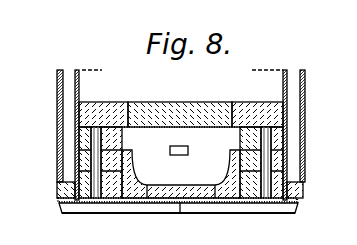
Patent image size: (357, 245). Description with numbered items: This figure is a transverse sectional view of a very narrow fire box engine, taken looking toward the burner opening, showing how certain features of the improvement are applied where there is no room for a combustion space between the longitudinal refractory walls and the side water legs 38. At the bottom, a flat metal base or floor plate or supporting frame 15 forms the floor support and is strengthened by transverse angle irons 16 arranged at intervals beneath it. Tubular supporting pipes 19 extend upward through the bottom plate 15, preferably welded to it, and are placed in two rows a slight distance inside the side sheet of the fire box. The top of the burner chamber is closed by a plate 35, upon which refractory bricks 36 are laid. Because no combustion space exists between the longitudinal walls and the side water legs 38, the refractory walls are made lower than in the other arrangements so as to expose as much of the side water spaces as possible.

The side water legs 38 is at (57, 127).
The refractory bricks 36 is at (113, 101).
The plate 35 is at (182, 120).
The tubular supporting pipes 19 is at (76, 167).
The bottom plate 15 is at (135, 203).
The transverse angle irons 16 is at (210, 203).